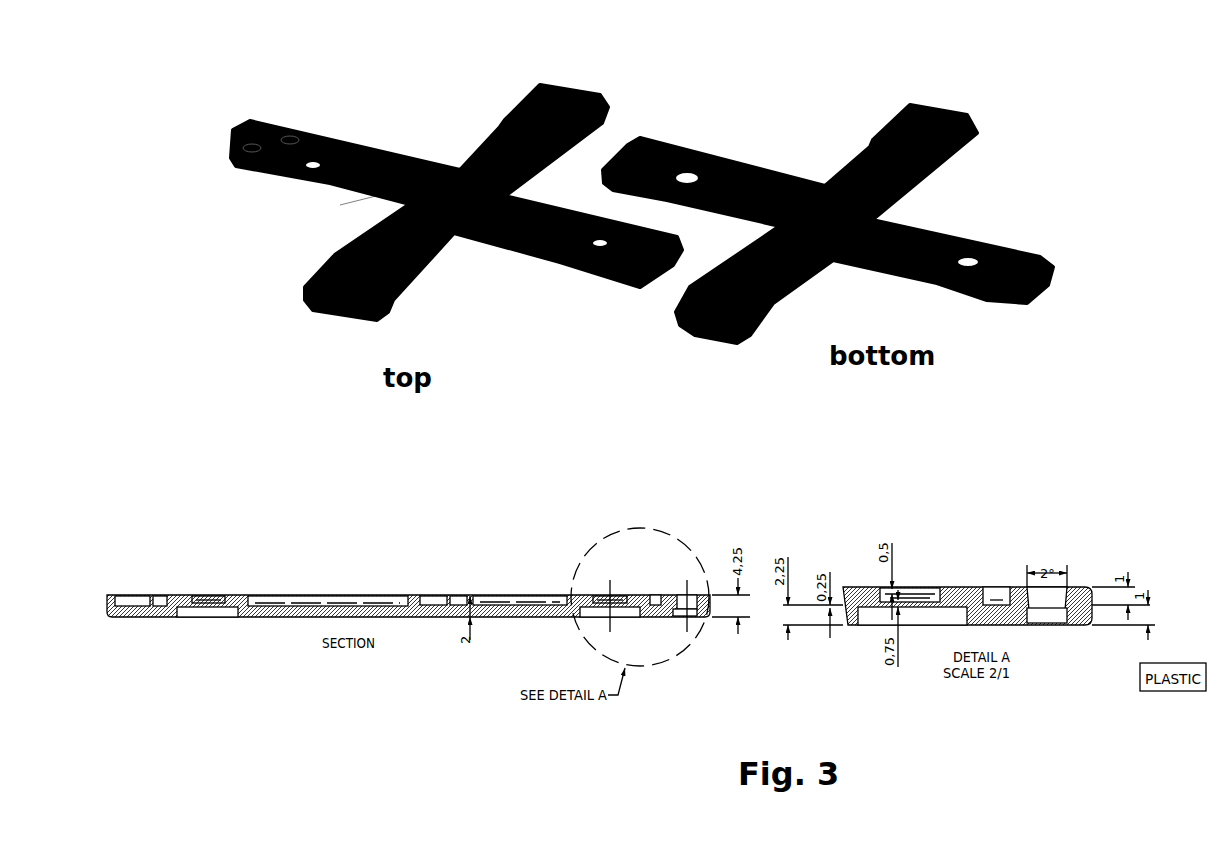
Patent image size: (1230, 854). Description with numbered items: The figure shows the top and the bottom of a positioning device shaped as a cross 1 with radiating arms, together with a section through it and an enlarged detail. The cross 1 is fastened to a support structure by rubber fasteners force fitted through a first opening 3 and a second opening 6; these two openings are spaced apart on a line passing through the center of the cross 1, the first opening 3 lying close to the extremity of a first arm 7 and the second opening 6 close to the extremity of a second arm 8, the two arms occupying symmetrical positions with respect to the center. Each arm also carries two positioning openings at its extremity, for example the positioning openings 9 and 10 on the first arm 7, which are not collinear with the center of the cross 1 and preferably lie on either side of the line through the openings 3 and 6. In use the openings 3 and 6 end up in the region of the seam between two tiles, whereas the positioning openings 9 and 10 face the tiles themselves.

The cross 1 is at (273, 318).
The first opening 3 is at (318, 148).
The second opening 6 is at (600, 245).
The first arm 7 is at (335, 208).
The second arm 8 is at (525, 255).
The positioning opening 9 is at (237, 143).
The positioning opening 10 is at (287, 127).